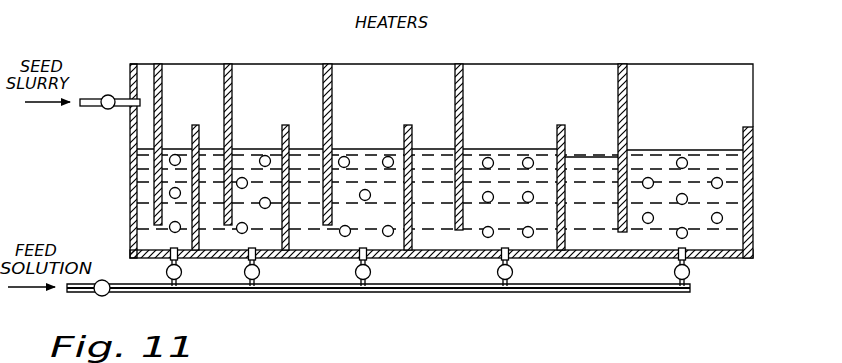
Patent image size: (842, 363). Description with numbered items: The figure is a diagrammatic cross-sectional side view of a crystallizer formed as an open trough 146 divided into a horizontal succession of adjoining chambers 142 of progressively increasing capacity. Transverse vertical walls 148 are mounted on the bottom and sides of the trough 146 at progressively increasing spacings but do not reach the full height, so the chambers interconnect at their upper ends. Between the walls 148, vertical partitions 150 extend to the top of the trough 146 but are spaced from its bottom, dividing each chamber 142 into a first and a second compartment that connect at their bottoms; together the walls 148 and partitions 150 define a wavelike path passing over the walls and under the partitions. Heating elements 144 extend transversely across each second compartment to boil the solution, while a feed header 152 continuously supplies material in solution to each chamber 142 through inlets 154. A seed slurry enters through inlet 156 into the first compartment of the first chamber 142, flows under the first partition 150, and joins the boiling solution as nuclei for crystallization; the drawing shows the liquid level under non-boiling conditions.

The chamber 142 is at (648, 246).
The heating element 144 is at (388, 156).
The trough 146 is at (753, 212).
The vertical wall 148 is at (223, 97).
The vertical partition 150 is at (567, 143).
The feed header 152 is at (350, 285).
The inlet 154 is at (502, 265).
The inlet 156 is at (125, 106).